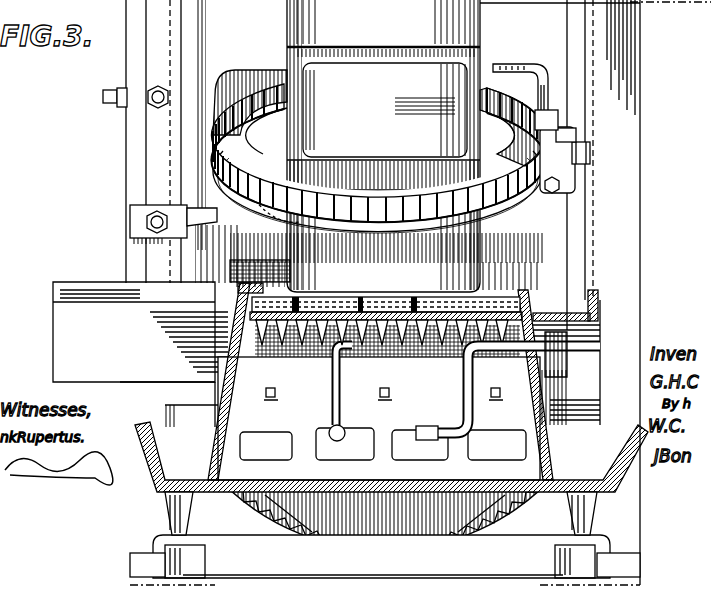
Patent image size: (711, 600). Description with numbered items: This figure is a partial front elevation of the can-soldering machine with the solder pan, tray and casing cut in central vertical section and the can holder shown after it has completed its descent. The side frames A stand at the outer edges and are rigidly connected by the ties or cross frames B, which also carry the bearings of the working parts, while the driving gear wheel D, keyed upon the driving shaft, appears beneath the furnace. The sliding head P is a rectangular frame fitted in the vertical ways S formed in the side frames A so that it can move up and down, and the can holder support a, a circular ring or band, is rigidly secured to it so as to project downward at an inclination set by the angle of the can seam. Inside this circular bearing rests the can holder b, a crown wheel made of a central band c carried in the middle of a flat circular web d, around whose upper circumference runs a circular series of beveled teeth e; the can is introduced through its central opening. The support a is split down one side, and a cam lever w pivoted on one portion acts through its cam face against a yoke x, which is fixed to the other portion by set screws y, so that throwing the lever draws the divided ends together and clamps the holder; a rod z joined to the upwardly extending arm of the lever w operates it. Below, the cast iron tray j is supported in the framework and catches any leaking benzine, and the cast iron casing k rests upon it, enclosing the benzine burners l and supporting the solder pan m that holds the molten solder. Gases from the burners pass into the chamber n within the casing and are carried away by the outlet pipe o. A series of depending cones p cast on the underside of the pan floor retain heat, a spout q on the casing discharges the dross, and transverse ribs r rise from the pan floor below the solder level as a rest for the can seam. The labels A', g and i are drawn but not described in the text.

The side frames A is at (418, 292).
The bolt A' is at (135, 83).
The ties or cross frames B is at (346, 406).
The driving gear wheel D is at (385, 320).
The sliding head P is at (405, 208).
The vertical ways S is at (173, 193).
The can holder support a is at (378, 171).
The can holder b is at (252, 95).
The central band c is at (390, 146).
The flat circular web d is at (380, 135).
The beveled teeth e is at (379, 153).
The block g is at (260, 271).
The pipe coupling i is at (450, 415).
The cast iron tray j is at (178, 492).
The cast iron casing k is at (228, 412).
The benzine burners l is at (386, 362).
The solder pan m is at (386, 314).
The chamber n is at (379, 402).
The outlet pipe o is at (448, 355).
The depending cones p is at (270, 388).
The spout q is at (566, 313).
The transverse ribs r is at (412, 297).
The cam lever w is at (550, 110).
The yoke x is at (576, 136).
The set screws y is at (590, 155).
The rod z is at (550, 72).